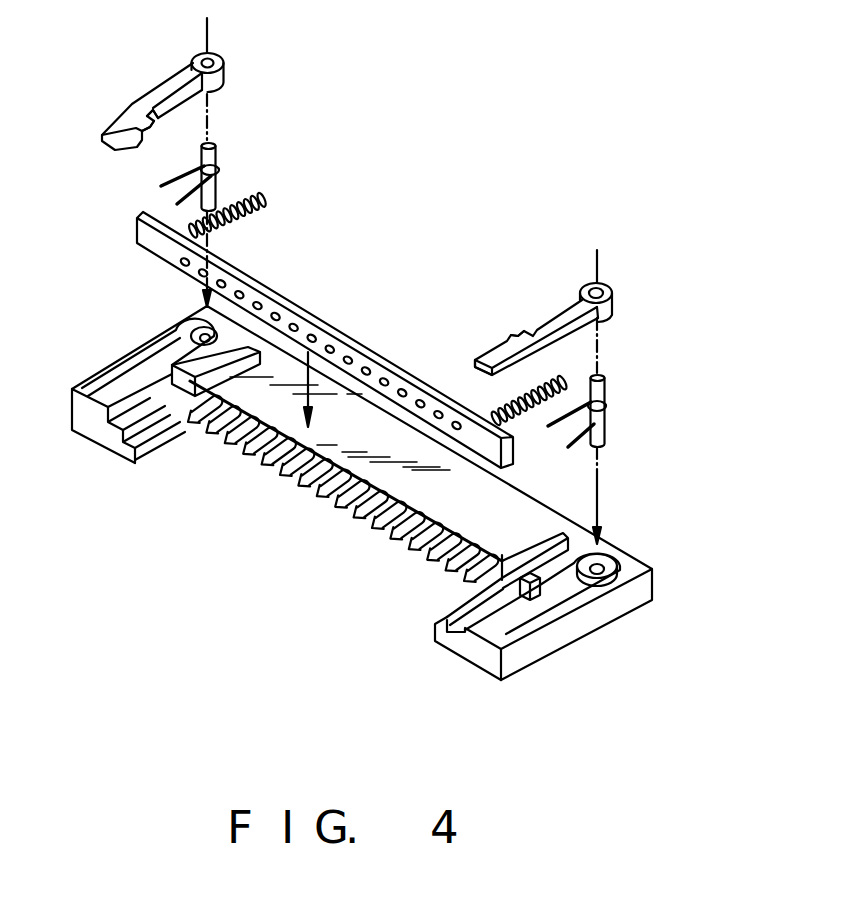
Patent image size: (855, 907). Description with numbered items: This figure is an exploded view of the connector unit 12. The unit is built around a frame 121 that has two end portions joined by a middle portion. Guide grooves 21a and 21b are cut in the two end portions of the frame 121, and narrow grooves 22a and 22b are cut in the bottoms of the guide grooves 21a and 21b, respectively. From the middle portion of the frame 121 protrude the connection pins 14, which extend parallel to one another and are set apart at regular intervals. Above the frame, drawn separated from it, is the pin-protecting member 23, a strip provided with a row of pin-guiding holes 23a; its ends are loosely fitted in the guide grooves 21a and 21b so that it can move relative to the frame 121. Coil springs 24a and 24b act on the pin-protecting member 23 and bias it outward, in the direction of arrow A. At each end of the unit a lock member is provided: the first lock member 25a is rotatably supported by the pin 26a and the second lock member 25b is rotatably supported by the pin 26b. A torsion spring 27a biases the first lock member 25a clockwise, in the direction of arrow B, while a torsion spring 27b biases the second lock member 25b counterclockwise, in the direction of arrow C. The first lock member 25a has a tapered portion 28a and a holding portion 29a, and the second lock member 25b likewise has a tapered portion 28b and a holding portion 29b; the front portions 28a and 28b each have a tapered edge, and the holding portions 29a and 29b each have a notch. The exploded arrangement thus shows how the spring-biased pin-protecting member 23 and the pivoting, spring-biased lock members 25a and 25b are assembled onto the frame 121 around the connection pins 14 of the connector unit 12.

The connector unit 12 is at (247, 610).
The connection pins 14 is at (356, 527).
The guide groove 21a is at (435, 623).
The guide groove 21b is at (145, 440).
The narrow groove 22a is at (455, 633).
The narrow groove 22b is at (108, 427).
The pin-protecting member 23 is at (330, 318).
The pin-guiding holes 23a is at (180, 266).
The coil spring 24a is at (568, 382).
The coil spring 24b is at (270, 197).
The first lock member 25a is at (565, 308).
The second lock member 25b is at (155, 80).
The pin 26a is at (605, 392).
The pin 26b is at (214, 140).
The torsion spring 27a is at (603, 408).
The torsion spring 27b is at (218, 170).
The tapered portion 28a is at (474, 358).
The tapered portion 28b is at (140, 130).
The holding portion 29a is at (512, 334).
The holding portion 29b is at (160, 122).
The frame 121 is at (655, 577).